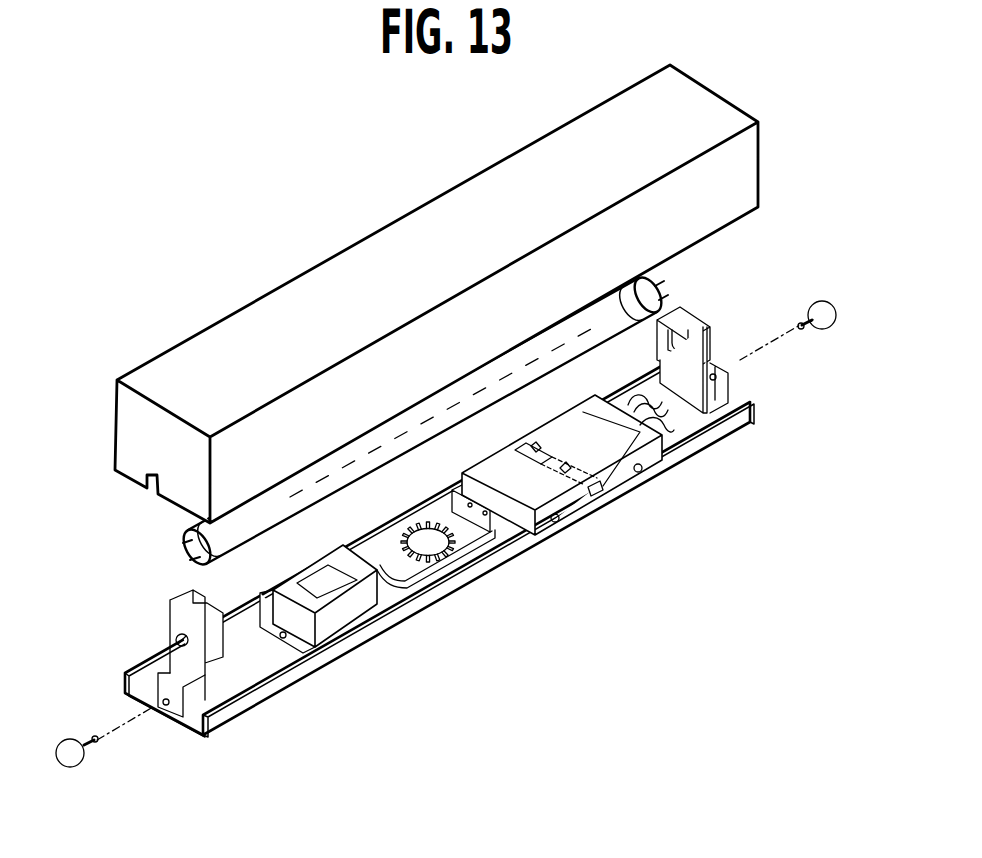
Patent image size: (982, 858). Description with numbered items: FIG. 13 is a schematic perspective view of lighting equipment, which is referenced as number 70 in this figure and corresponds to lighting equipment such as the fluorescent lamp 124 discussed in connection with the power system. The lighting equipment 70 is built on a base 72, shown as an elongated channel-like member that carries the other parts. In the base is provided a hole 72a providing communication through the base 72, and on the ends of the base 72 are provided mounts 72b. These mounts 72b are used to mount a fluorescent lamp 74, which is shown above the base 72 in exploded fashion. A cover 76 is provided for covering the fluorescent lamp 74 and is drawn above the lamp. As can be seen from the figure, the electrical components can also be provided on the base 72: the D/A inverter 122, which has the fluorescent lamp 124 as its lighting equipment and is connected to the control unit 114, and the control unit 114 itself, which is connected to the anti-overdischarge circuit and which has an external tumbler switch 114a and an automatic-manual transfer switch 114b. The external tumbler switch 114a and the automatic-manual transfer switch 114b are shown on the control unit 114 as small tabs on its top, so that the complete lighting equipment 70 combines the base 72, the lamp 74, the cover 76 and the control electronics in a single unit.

The lighting equipment 70 is at (341, 171).
The fluorescent lamp 124 is at (322, 194).
The cover 76 is at (222, 338).
The fluorescent lamp 74 is at (178, 540).
The base 72 is at (232, 720).
The hole 72a is at (433, 547).
The mounts 72b is at (180, 618).
The D/A inverter 122 is at (342, 617).
The control unit 114 is at (650, 458).
The external tumbler switch 114a is at (529, 446).
The automatic-manual transfer switch 114b is at (568, 473).